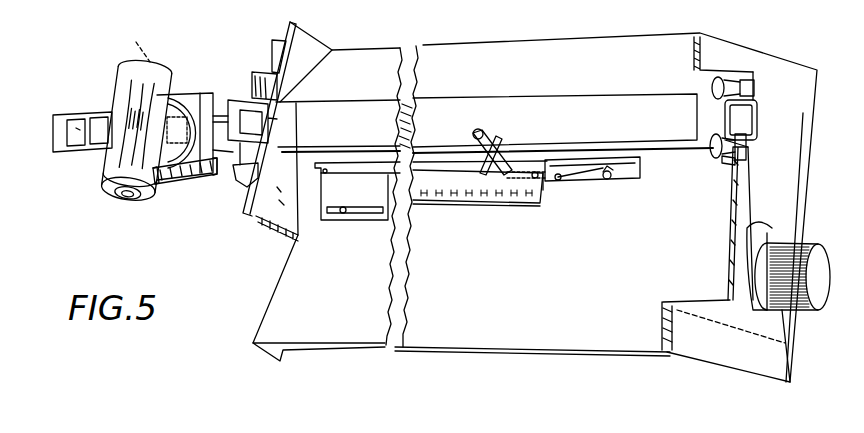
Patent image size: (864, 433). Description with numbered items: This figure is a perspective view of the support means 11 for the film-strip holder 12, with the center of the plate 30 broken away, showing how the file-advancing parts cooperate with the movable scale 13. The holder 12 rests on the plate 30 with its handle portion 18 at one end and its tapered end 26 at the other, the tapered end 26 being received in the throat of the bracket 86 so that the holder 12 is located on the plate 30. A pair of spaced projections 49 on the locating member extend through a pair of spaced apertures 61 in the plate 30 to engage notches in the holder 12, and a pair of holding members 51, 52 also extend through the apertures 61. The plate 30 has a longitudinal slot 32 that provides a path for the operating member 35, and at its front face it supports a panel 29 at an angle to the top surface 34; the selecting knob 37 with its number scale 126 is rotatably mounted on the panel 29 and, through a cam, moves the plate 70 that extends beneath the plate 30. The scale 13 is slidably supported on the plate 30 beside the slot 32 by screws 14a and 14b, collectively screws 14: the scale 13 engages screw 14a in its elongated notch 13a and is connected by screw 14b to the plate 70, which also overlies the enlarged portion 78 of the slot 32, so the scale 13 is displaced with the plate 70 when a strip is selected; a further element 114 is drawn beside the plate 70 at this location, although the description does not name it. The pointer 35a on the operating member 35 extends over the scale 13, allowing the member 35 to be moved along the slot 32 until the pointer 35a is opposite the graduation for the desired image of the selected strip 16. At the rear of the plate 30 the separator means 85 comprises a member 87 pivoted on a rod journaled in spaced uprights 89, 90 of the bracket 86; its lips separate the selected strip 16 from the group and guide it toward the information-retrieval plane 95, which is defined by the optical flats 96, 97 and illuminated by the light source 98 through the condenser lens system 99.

The support means 11 is at (80, 143).
The holder 12 is at (522, 105).
The scale 13 is at (433, 206).
The elongated notch 13a is at (364, 214).
The screws 14 is at (135, 38).
The screw 14a is at (338, 220).
The screw 14b is at (545, 200).
The selected strip 16 is at (55, 135).
The handle portion 18 is at (770, 78).
The tapered end 26 is at (290, 102).
The panel 29 is at (762, 363).
The plate 30 is at (514, 333).
The slot 32 is at (323, 174).
The top surface 34 is at (525, 272).
The operating member 35 is at (478, 132).
The pointer 35a is at (486, 180).
The selecting knob 37 is at (806, 243).
The spaced projections 49 is at (712, 85).
The holding member 51 is at (743, 86).
The holding member 52 is at (737, 162).
The spaced apertures 61 is at (722, 162).
The plate 70 is at (549, 168).
The enlarged portion 78 is at (558, 184).
The separator means 85 is at (244, 99).
The bracket 86 is at (270, 229).
The member 87 is at (272, 60).
The upright 89 is at (256, 78).
The upright 90 is at (242, 170).
The information-retrieval plane 95 is at (177, 185).
The optical flat 96 is at (200, 178).
The optical flat 97 is at (200, 95).
The light source 98 is at (122, 82).
The condenser lens system 99 is at (168, 183).
The roller 114 is at (611, 183).
The number scale 126 is at (748, 252).